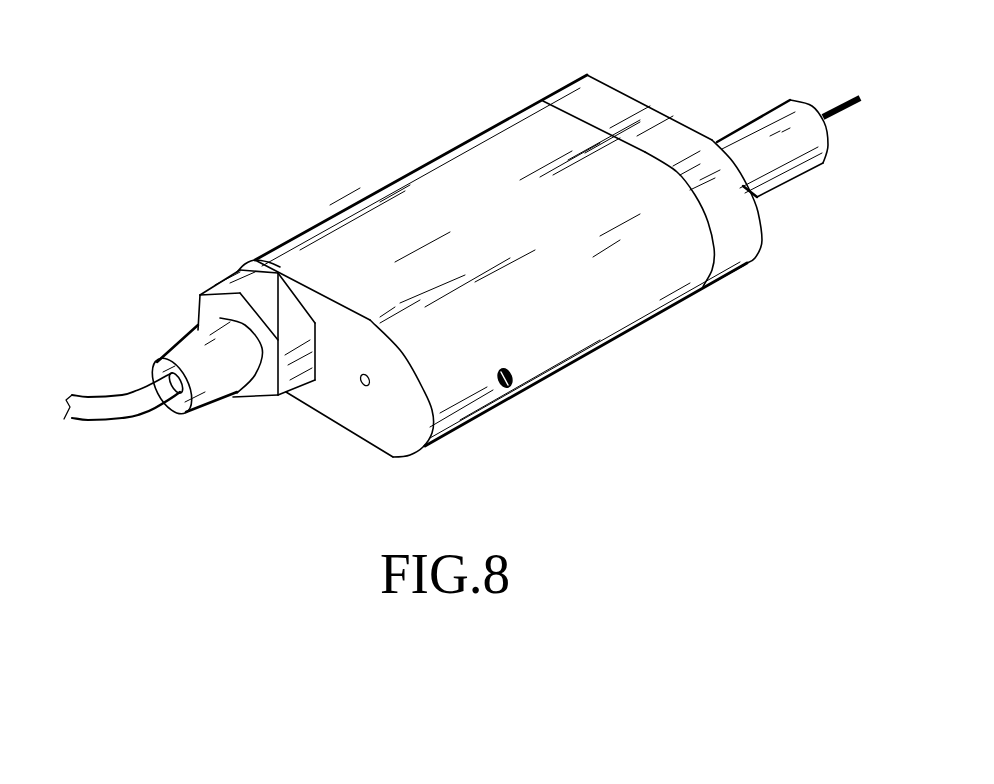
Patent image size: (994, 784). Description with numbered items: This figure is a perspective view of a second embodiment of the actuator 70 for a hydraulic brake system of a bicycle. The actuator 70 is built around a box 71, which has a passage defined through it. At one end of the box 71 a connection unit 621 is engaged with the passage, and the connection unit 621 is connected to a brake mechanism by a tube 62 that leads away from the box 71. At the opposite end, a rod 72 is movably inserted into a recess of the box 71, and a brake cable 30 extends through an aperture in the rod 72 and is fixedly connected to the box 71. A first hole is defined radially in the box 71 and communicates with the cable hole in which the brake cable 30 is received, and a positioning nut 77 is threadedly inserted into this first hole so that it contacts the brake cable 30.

The actuator 70 is at (365, 155).
The box 71 is at (635, 310).
The rod 72 is at (782, 162).
The positioning nut 77 is at (508, 387).
The brake cable 30 is at (842, 100).
The connection unit 621 is at (200, 318).
The tube 62 is at (127, 417).